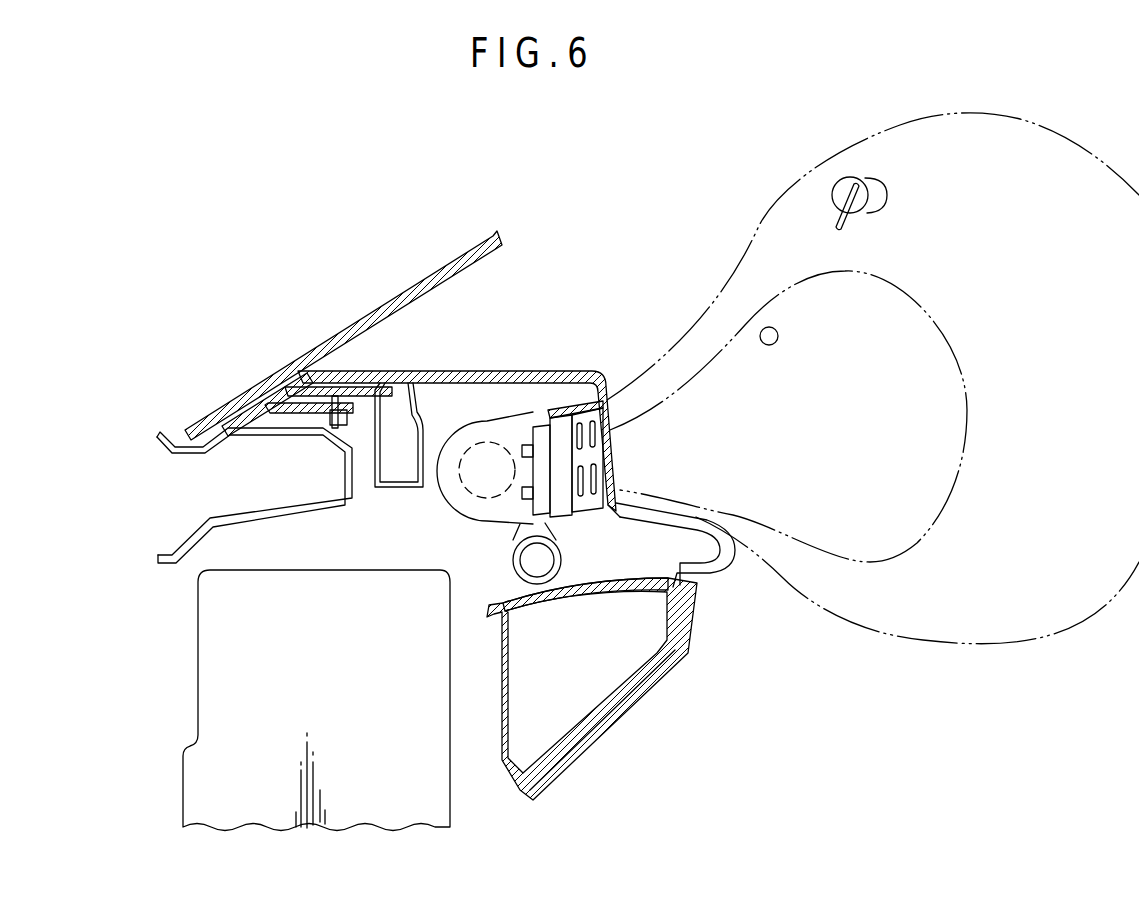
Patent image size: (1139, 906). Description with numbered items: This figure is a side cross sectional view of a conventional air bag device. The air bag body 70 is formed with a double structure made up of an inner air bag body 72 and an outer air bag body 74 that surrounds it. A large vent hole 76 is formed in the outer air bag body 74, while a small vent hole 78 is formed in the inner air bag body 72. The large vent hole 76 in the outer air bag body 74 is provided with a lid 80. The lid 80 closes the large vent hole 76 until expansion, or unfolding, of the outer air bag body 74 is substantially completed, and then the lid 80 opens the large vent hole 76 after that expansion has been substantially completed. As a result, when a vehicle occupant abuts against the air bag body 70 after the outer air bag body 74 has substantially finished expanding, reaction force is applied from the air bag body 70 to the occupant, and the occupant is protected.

The air bag body 70 is at (641, 228).
The inner air bag body 72 is at (707, 360).
The outer air bag body 74 is at (745, 240).
The large vent hole 76 is at (882, 180).
The small vent hole 78 is at (779, 339).
The lid 80 is at (830, 190).